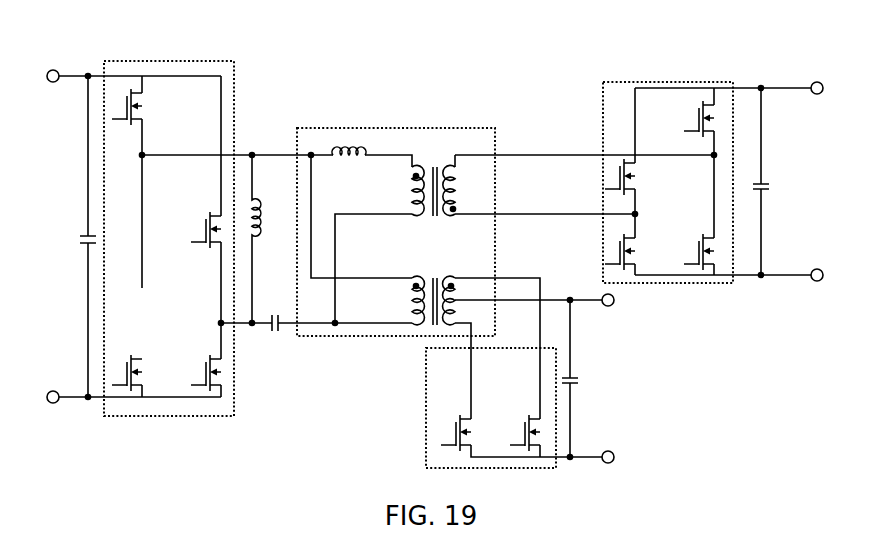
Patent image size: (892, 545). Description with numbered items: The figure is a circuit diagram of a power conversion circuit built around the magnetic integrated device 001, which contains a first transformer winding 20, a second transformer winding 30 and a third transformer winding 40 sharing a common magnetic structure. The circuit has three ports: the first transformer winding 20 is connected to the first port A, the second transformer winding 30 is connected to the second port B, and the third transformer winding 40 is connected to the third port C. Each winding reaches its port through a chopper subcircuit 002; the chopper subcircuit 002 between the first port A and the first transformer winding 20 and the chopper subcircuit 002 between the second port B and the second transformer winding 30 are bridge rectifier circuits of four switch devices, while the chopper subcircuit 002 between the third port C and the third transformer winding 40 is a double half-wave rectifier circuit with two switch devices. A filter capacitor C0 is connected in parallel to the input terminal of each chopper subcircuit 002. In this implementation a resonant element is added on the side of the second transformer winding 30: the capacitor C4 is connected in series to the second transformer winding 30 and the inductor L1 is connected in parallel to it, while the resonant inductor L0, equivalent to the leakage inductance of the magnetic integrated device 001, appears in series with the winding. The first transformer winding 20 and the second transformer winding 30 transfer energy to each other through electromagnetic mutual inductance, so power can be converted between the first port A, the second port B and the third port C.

The magnetic integrated device 001 is at (362, 128).
The chopper subcircuit 002 is at (234, 102).
The first transformer winding 20 is at (458, 190).
The second transformer winding 30 is at (404, 245).
The third transformer winding 40 is at (458, 300).
The resonant inductor L0 is at (349, 166).
The inductor L1 is at (270, 239).
The capacitor C4 is at (276, 337).
The filter capacitor C0 is at (428, 266).
The first port A is at (817, 181).
The second port B is at (52, 236).
The third port C is at (607, 378).